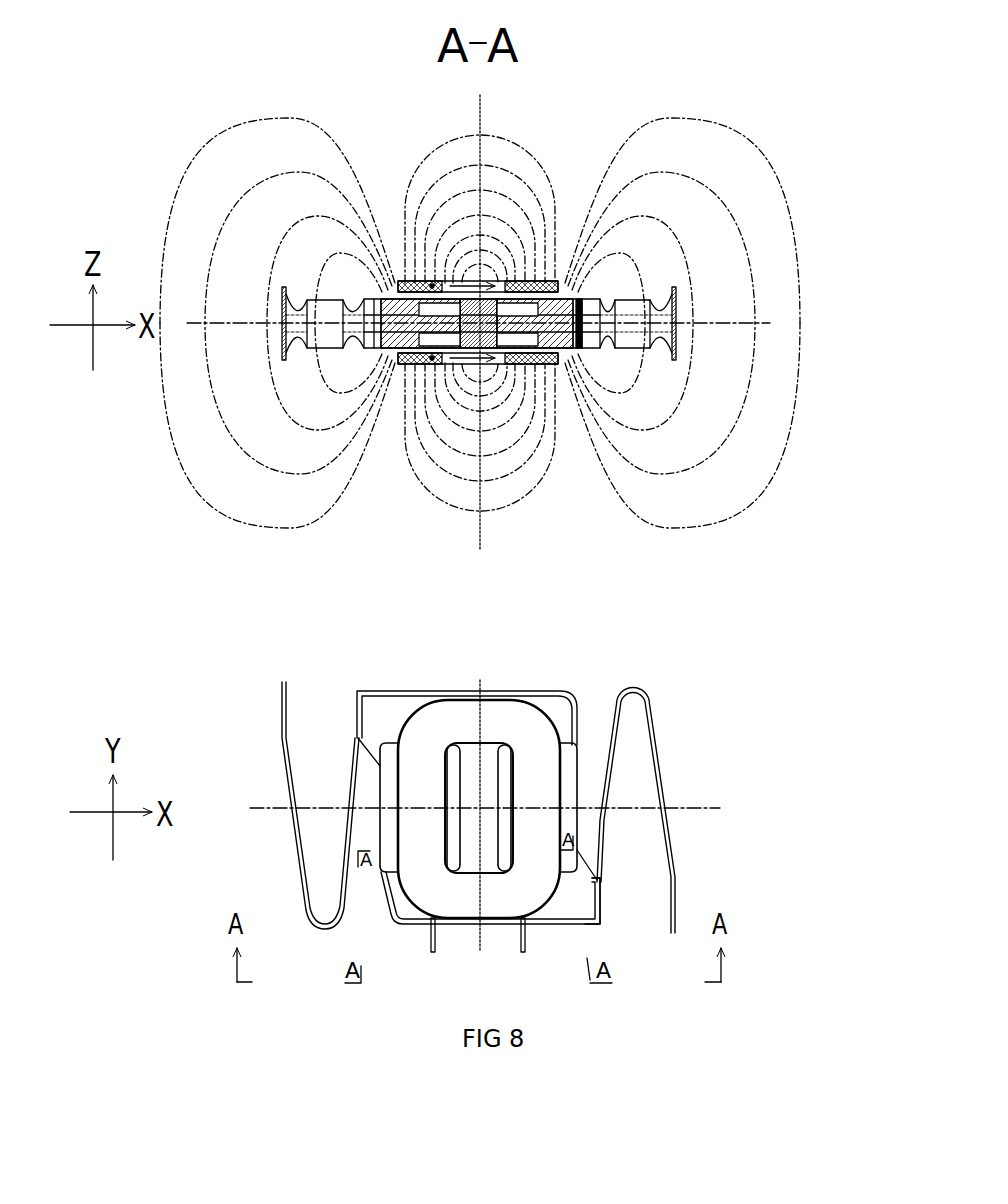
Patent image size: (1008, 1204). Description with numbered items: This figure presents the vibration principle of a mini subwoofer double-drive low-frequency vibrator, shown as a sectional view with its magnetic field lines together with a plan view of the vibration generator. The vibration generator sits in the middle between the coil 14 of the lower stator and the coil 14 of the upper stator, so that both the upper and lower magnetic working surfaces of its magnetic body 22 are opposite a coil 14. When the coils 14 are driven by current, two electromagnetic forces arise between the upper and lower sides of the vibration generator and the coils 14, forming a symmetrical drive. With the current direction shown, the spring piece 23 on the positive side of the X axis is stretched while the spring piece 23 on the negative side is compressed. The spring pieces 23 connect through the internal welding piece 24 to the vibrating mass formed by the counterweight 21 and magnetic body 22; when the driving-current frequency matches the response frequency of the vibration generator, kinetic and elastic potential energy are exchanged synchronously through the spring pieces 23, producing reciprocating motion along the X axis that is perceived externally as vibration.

The coil 14 is at (563, 288).
The magnetic body 22 is at (575, 300).
The spring piece 23 is at (677, 316).
The counterweight 21 is at (567, 900).
The internal welding piece 24 is at (600, 897).